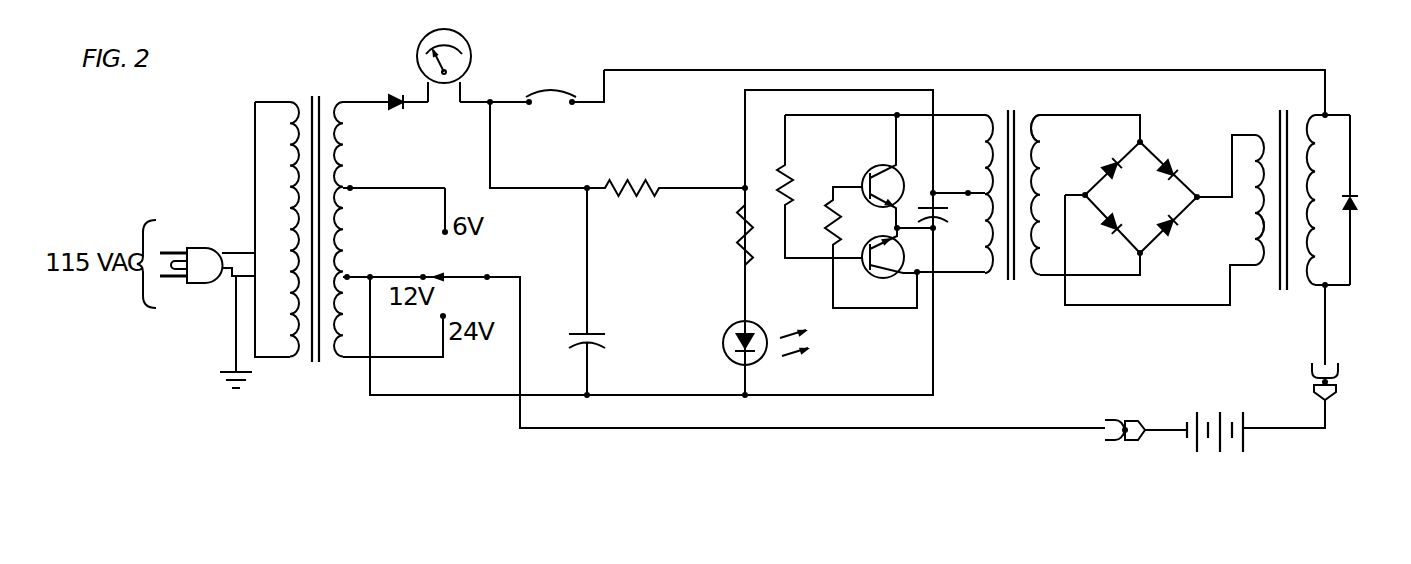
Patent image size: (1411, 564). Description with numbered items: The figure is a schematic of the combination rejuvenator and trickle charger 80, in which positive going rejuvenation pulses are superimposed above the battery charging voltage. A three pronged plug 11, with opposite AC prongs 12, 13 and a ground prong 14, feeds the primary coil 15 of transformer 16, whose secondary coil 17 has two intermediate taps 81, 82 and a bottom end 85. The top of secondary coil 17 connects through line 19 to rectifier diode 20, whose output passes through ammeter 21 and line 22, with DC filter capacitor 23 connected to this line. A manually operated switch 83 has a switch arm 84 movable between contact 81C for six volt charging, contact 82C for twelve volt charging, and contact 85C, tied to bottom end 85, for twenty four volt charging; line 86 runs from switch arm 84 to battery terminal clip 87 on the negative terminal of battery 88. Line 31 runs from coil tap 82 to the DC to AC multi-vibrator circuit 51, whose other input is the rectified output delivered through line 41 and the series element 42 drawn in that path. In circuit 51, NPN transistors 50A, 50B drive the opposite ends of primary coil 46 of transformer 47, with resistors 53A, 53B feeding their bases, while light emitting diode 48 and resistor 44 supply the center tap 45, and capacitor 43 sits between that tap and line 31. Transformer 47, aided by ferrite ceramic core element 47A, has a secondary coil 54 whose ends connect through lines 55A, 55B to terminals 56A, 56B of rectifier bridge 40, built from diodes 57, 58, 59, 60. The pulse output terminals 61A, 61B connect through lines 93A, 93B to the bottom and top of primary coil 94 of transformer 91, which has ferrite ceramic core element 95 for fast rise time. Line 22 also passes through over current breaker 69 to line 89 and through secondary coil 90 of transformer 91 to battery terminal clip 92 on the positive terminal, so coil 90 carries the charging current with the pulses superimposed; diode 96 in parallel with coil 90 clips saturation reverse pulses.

The three pronged plug 11 is at (208, 248).
The AC prong 12 is at (178, 252).
The AC prong 13 is at (176, 268).
The ground prong 14 is at (177, 279).
The primary coil 15 is at (293, 144).
The transformer 16 is at (318, 95).
The secondary coil 17 is at (344, 145).
The line 19 is at (362, 101).
The rectifier diode 20 is at (397, 94).
The ammeter 21 is at (465, 36).
The line 22 is at (478, 100).
The DC filter capacitor 23 is at (574, 332).
The line 31 is at (432, 396).
The four diode rectifier bridge 40 is at (1180, 142).
The line 41 is at (515, 187).
The resistor 42 is at (611, 184).
The capacitor 43 is at (951, 223).
The resistor 44 is at (736, 243).
The center tap 45 is at (968, 191).
The primary coil 46 is at (992, 137).
The transformer 47 is at (1012, 97).
The ferrite ceramic core element 47A is at (1028, 113).
The light emitting diode 48 is at (723, 343).
The NPN transistor 50A is at (869, 169).
The NPN transistor 50B is at (866, 270).
The DC to AC inverter multi-vibrator circuit 51 is at (720, 154).
The resistor 53A is at (781, 196).
The resistor 53B is at (827, 210).
The secondary coil 54 is at (1038, 131).
The line 55A is at (1115, 115).
The line 55B is at (1040, 278).
The bridge terminal 56A is at (1143, 140).
The bridge terminal 56B is at (1142, 257).
The diode 57 is at (1110, 161).
The diode 58 is at (1120, 223).
The diode 59 is at (1168, 222).
The diode 60 is at (1178, 168).
The pulse signal output terminal 61A is at (1086, 200).
The pulse signal output terminal 61B is at (1198, 204).
The over current breaker 69 is at (554, 91).
The combination rejuvenator and trickle charger 80 is at (722, 58).
The intermediate tap 81 is at (351, 186).
The contact 81C is at (444, 230).
The intermediate tap 82 is at (342, 276).
The contact 82C is at (423, 274).
The manually operated switch 83 is at (490, 232).
The switch arm 84 is at (470, 277).
The bottom end of secondary coil 85 is at (327, 362).
The contact 85C is at (442, 320).
The line 86 is at (1047, 427).
The battery terminal clip 87 is at (1135, 420).
The battery 88 is at (1225, 407).
The line 89 is at (815, 88).
The secondary coil 90 is at (1308, 178).
The transformer 91 is at (1299, 107).
The battery terminal clip 92 is at (1316, 388).
The line 93A is at (1089, 307).
The line 93B is at (1252, 134).
The primary coil 94 is at (1263, 231).
The ferrite ceramic core element 95 is at (1279, 283).
The diode 96 is at (1340, 212).